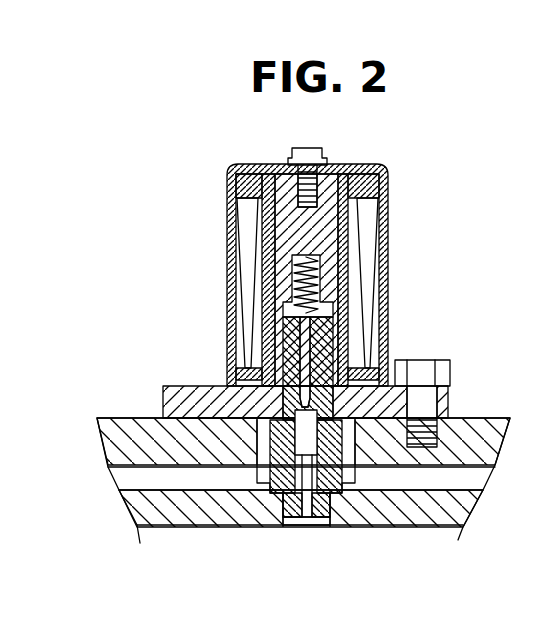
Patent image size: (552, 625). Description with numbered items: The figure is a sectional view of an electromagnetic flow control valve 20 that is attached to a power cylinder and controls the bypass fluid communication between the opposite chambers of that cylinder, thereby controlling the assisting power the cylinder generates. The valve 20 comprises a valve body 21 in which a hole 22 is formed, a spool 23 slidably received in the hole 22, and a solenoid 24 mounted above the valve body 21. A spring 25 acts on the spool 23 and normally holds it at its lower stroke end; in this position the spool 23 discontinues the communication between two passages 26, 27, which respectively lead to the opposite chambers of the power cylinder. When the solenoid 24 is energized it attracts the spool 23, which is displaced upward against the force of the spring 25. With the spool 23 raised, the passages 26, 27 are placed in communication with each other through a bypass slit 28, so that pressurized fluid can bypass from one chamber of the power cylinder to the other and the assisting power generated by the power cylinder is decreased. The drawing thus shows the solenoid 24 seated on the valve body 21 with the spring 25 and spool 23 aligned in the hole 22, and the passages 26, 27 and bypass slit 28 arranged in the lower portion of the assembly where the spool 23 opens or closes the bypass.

The electromagnetic flow control valve 20 is at (395, 190).
The valve body 21 is at (193, 392).
The hole 22 is at (300, 345).
The spool 23 is at (333, 340).
The solenoid 24 is at (372, 232).
The spring 25 is at (294, 270).
The passage 26 is at (140, 487).
The passage 27 is at (313, 523).
The bypass slit 28 is at (283, 465).